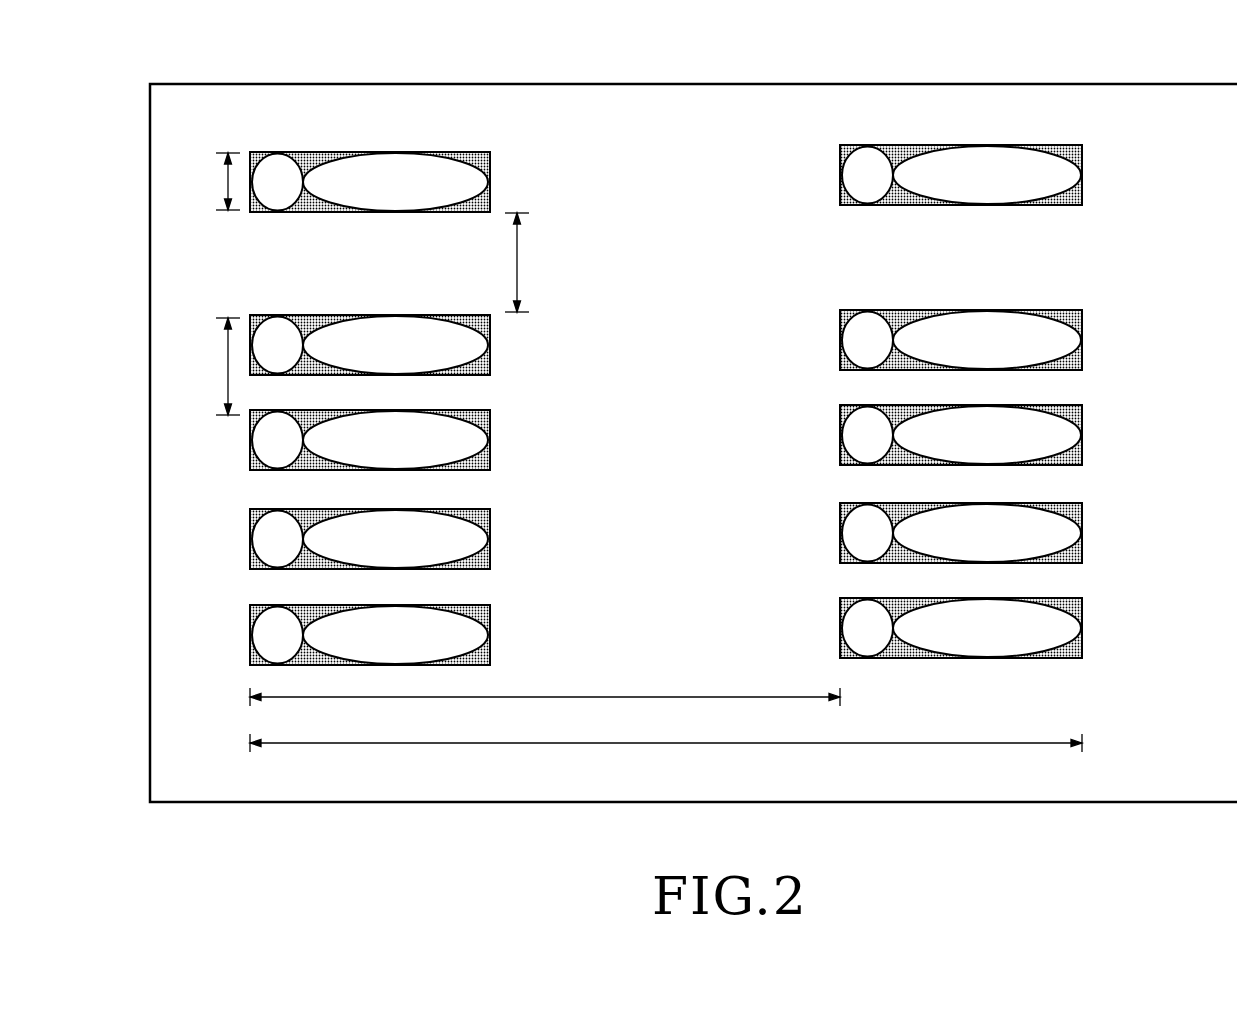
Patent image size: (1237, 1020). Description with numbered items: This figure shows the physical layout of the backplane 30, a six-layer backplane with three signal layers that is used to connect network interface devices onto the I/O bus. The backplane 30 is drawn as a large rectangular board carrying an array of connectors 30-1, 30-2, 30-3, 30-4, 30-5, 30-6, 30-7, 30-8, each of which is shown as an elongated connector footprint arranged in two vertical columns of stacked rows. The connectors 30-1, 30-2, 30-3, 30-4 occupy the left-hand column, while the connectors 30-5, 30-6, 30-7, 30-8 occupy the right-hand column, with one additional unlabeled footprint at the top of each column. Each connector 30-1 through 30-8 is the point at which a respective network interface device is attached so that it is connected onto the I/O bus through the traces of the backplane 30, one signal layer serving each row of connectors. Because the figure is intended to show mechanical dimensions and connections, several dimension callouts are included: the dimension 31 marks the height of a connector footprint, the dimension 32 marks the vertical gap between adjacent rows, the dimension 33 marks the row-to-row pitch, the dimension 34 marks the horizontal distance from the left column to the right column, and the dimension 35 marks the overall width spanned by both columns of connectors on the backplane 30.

The backplane 30 is at (747, 84).
The connector 30-1 is at (490, 333).
The connector 30-2 is at (490, 437).
The connector 30-3 is at (490, 528).
The connector 30-4 is at (490, 622).
The connector 30-5 is at (1082, 320).
The connector 30-6 is at (1082, 412).
The connector 30-7 is at (1082, 520).
The connector 30-8 is at (1082, 625).
The cell height 31 is at (228, 188).
The row spacing 32 is at (517, 270).
The row pitch 33 is at (228, 352).
The column pitch 34 is at (741, 697).
The array width 35 is at (746, 743).